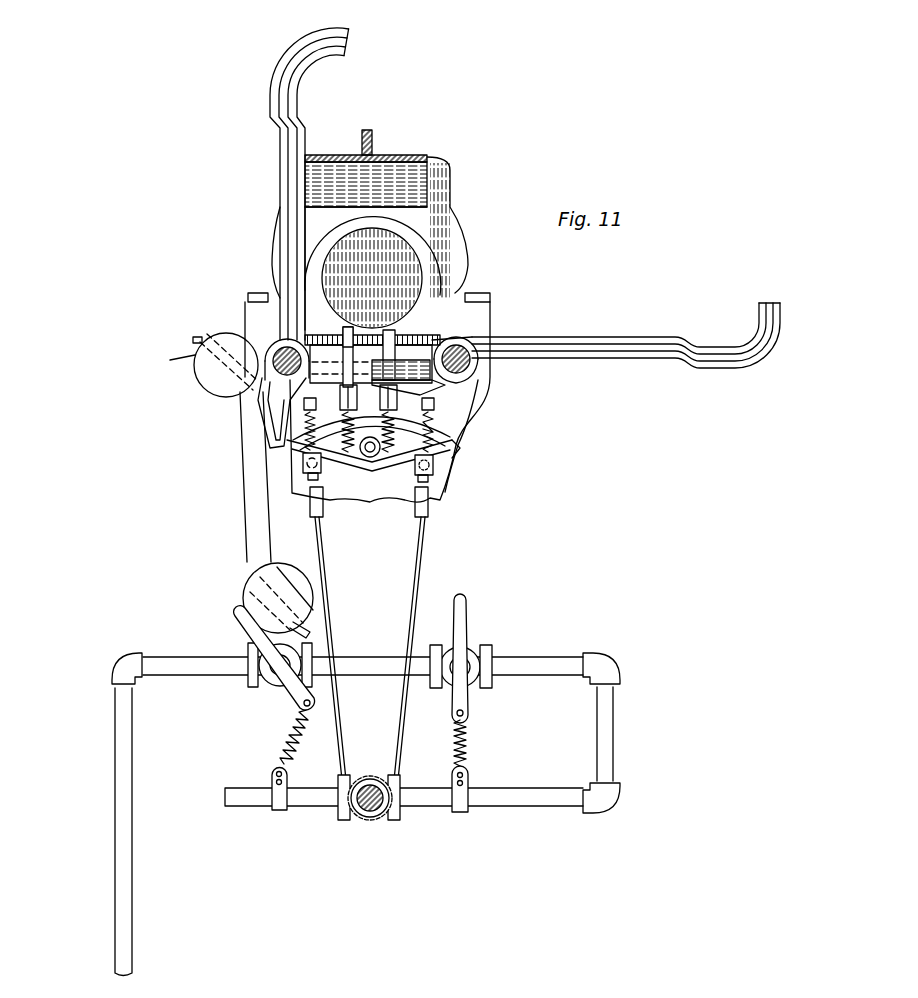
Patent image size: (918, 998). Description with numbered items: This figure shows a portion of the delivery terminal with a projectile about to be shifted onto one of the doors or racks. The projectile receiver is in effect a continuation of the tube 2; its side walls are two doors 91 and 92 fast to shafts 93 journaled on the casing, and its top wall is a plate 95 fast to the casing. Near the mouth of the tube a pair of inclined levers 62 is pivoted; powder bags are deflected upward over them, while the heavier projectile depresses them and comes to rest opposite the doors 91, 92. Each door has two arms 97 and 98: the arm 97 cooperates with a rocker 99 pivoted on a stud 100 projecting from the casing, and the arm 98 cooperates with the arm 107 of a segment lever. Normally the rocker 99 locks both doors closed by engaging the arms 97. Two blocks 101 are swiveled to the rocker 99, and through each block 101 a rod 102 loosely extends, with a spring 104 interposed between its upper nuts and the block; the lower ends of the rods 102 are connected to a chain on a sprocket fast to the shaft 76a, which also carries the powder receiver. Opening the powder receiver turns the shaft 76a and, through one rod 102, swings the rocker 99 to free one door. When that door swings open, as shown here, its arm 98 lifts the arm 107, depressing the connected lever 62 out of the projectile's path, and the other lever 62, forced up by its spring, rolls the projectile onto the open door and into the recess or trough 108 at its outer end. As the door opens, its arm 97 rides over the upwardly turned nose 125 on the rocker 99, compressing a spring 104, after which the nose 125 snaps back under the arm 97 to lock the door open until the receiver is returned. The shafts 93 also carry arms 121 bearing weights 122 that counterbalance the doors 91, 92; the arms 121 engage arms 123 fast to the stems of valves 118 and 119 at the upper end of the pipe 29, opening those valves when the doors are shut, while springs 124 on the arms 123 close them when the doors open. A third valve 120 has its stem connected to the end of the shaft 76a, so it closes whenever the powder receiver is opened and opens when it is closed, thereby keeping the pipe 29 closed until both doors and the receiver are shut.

The tube 2 is at (375, 217).
The pipe 29 is at (121, 708).
The inclined lever 62 is at (388, 335).
The shaft 76a is at (372, 808).
The door 91 is at (305, 172).
The door 92 is at (598, 337).
The shaft 93 is at (277, 345).
The plate 95 is at (393, 157).
The arm 97 is at (262, 423).
The arm 98 is at (263, 403).
The rocker 99 is at (448, 470).
The stud 100 is at (372, 457).
The block 101 is at (450, 490).
The rod 102 is at (403, 698).
The spring 104 is at (287, 447).
The arm 107 is at (328, 338).
The recess or trough 108 is at (299, 64).
The valve 118 is at (250, 648).
The valve 119 is at (493, 656).
The valve 120 is at (345, 818).
The arm 121 is at (201, 350).
The weight 122 is at (216, 381).
The arm 123 is at (238, 608).
The spring 124 is at (283, 740).
The nose 125 is at (370, 432).